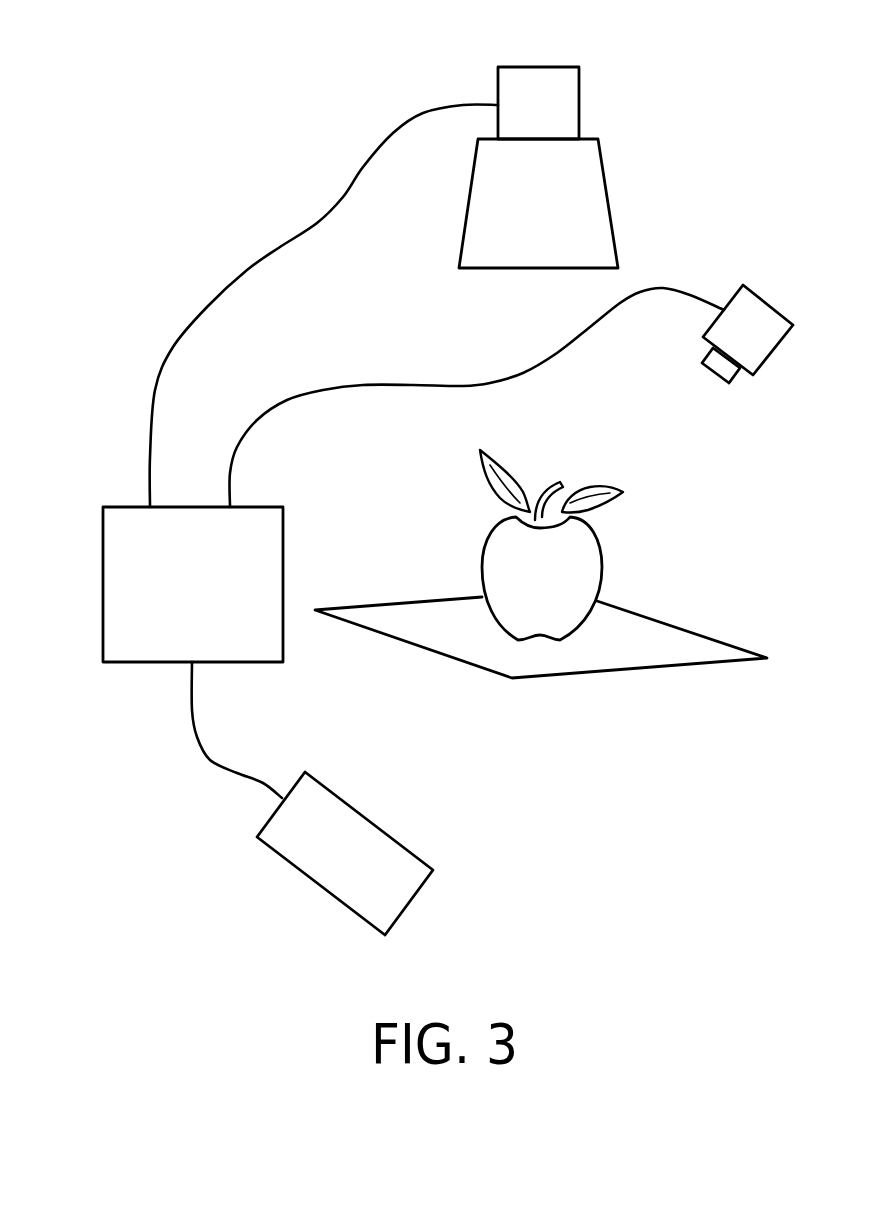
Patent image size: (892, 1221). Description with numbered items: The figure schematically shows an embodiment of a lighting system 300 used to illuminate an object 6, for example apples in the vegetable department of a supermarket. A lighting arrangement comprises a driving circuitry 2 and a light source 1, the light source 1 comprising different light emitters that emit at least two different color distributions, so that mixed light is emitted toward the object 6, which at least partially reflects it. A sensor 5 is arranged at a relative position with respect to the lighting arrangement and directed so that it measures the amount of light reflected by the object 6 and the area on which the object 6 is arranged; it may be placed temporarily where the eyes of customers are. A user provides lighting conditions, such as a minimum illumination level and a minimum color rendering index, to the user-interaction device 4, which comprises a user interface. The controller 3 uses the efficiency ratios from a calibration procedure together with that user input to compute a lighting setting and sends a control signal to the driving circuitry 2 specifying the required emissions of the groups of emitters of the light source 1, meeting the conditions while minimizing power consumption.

The lighting system 300 is at (131, 108).
The light source 1 is at (612, 204).
The driving circuitry 2 is at (580, 103).
The controller 3 is at (102, 583).
The user-interaction device 4 is at (412, 903).
The sensor 5 is at (770, 300).
The object 6 is at (603, 568).